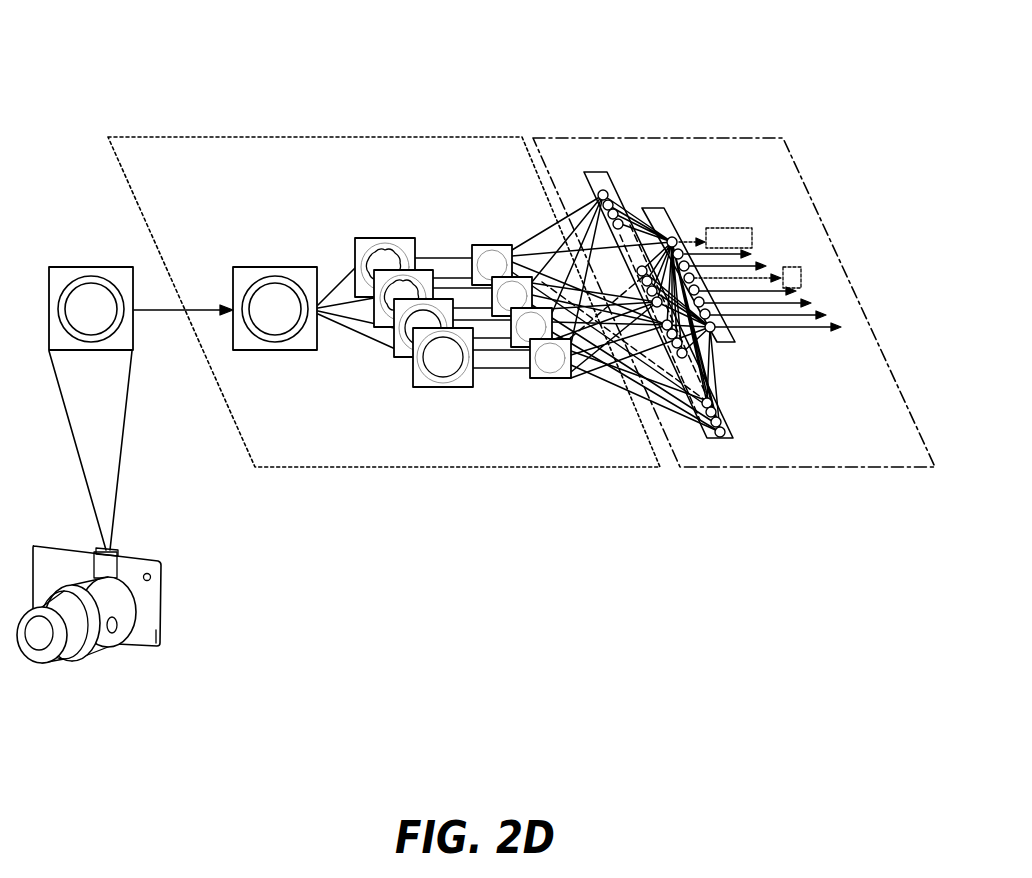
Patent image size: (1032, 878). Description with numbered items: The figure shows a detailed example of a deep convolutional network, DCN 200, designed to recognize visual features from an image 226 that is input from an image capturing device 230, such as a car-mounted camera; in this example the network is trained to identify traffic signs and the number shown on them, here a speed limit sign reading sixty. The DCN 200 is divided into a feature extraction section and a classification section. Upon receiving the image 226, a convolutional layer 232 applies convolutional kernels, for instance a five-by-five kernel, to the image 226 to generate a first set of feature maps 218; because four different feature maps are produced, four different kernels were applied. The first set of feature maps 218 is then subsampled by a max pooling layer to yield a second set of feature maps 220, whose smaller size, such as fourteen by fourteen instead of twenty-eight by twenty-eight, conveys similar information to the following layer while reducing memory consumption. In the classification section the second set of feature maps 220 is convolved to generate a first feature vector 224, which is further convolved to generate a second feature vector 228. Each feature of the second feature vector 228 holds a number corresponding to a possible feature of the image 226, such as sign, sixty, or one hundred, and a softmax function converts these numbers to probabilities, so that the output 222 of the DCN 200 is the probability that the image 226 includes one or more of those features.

The deep convolutional network 200 is at (170, 97).
The first set of feature maps 218 is at (378, 225).
The second set of feature maps 220 is at (482, 232).
The output 222 is at (715, 196).
The first feature vector 224 is at (593, 172).
The image 226 is at (84, 267).
The second feature vector 228 is at (737, 346).
The image capturing device 230 is at (88, 557).
The convolutional layer 232 is at (270, 267).